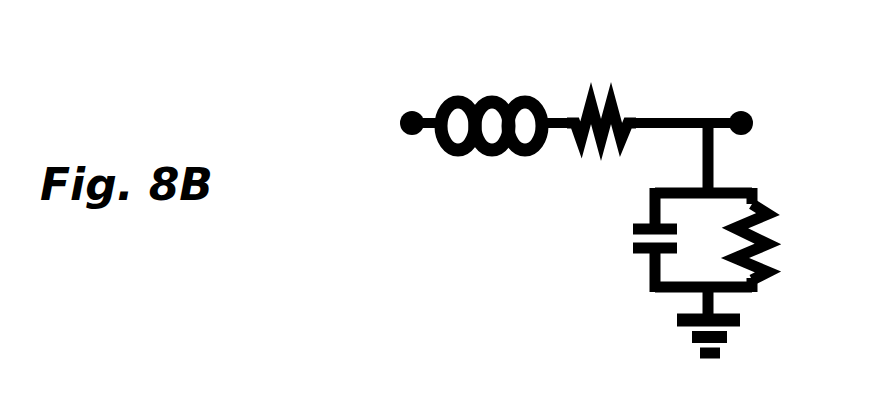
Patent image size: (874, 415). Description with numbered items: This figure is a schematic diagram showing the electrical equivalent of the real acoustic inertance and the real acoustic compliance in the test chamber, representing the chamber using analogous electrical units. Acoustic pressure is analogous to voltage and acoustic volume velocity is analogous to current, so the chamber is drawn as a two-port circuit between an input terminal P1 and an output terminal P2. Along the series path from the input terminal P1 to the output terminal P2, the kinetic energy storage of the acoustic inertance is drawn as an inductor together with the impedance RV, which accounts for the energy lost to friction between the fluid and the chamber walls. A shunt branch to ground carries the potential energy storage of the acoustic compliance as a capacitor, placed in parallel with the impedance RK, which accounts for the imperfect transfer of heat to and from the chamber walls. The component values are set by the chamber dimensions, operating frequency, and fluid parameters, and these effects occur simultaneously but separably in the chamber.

The input terminal P1 is at (386, 124).
The output terminal P2 is at (781, 124).
The impedance R_V RV is at (653, 89).
The impedance R_K RK is at (772, 240).